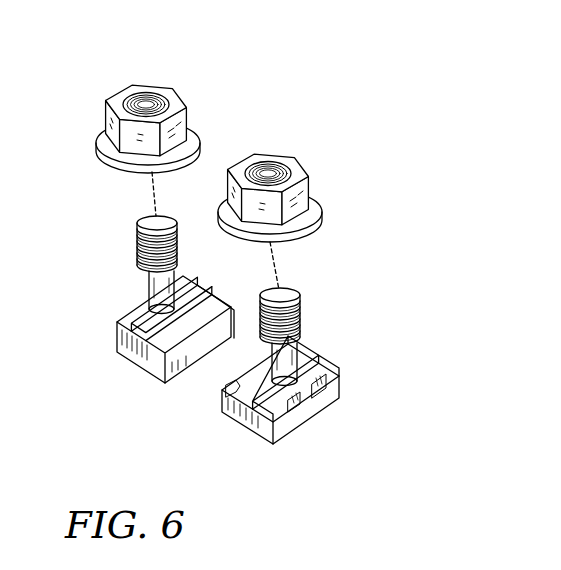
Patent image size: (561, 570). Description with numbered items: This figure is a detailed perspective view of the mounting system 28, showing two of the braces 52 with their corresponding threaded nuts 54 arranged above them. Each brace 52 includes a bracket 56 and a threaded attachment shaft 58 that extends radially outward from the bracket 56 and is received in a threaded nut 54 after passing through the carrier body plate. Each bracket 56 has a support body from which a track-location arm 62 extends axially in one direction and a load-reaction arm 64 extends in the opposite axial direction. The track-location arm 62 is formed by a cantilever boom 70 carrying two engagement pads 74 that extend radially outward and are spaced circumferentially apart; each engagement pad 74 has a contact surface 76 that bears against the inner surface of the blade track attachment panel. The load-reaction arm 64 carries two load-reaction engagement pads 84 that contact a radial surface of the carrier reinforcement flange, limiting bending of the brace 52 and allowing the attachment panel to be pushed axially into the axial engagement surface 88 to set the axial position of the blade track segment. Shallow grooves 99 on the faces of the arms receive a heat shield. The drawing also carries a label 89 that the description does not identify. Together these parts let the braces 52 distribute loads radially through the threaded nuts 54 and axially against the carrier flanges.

The mounting system 28 is at (428, 116).
The brace 52 is at (203, 219).
The threaded nut 54 is at (186, 92).
The bracket 56 is at (108, 337).
The threaded attachment shaft 58 is at (135, 242).
The track-location arm 62 is at (138, 373).
The load-reaction arm 64 is at (100, 360).
The cantilever boom 70 is at (157, 372).
The engagement pad 74 is at (270, 282).
The contact surface 76 is at (236, 311).
The load-reaction engagement pad 84 is at (285, 428).
The axial engagement surface 88 is at (203, 300).
The edge 89 is at (550, 568).
The shallow groove 99 is at (308, 409).